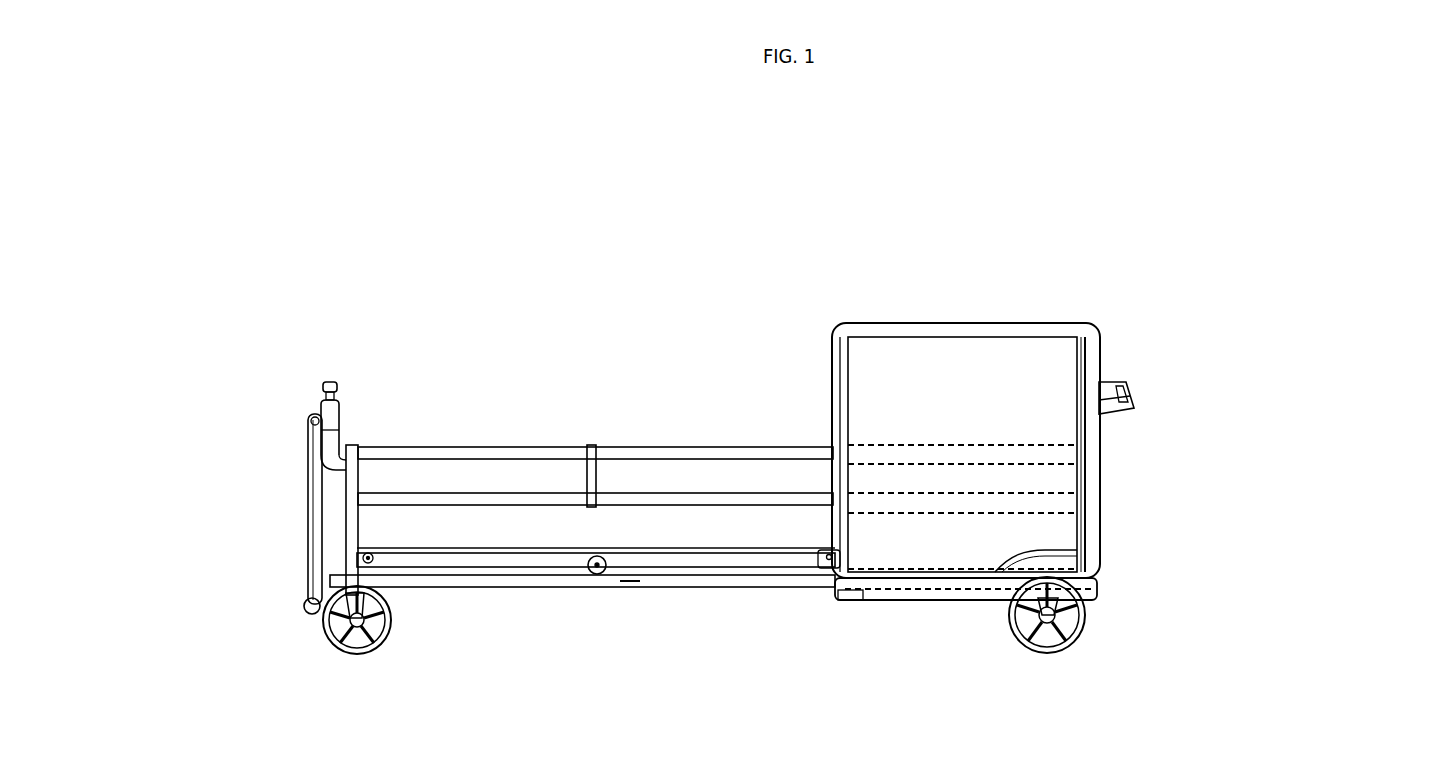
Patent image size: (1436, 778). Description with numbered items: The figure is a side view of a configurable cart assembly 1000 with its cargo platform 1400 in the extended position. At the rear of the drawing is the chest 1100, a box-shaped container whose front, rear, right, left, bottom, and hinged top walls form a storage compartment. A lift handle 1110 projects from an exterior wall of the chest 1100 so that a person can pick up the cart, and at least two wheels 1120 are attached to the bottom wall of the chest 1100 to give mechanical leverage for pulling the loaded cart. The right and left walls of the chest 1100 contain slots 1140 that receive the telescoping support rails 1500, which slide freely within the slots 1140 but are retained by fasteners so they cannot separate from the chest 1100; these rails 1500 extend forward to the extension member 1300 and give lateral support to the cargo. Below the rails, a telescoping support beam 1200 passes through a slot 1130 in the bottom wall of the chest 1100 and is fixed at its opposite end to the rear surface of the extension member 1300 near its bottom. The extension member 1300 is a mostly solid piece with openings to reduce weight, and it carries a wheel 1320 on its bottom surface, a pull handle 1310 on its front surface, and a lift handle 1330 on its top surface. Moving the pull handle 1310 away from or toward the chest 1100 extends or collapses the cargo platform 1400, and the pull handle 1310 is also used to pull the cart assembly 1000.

The cart assembly 1000 is at (789, 427).
The chest 1100 is at (1082, 472).
The lift handle 1110 is at (1201, 386).
The wheels 1120 is at (1092, 637).
The slot 1130 is at (1080, 581).
The slots 1140 is at (1013, 438).
The telescoping support beam 1200 is at (713, 596).
The extension member 1300 is at (354, 452).
The pull handle 1310 is at (306, 596).
The wheel 1320 is at (314, 634).
The lift handle 1330 is at (314, 386).
The cargo platform 1400 is at (598, 549).
The telescoping support rails 1500 is at (595, 460).